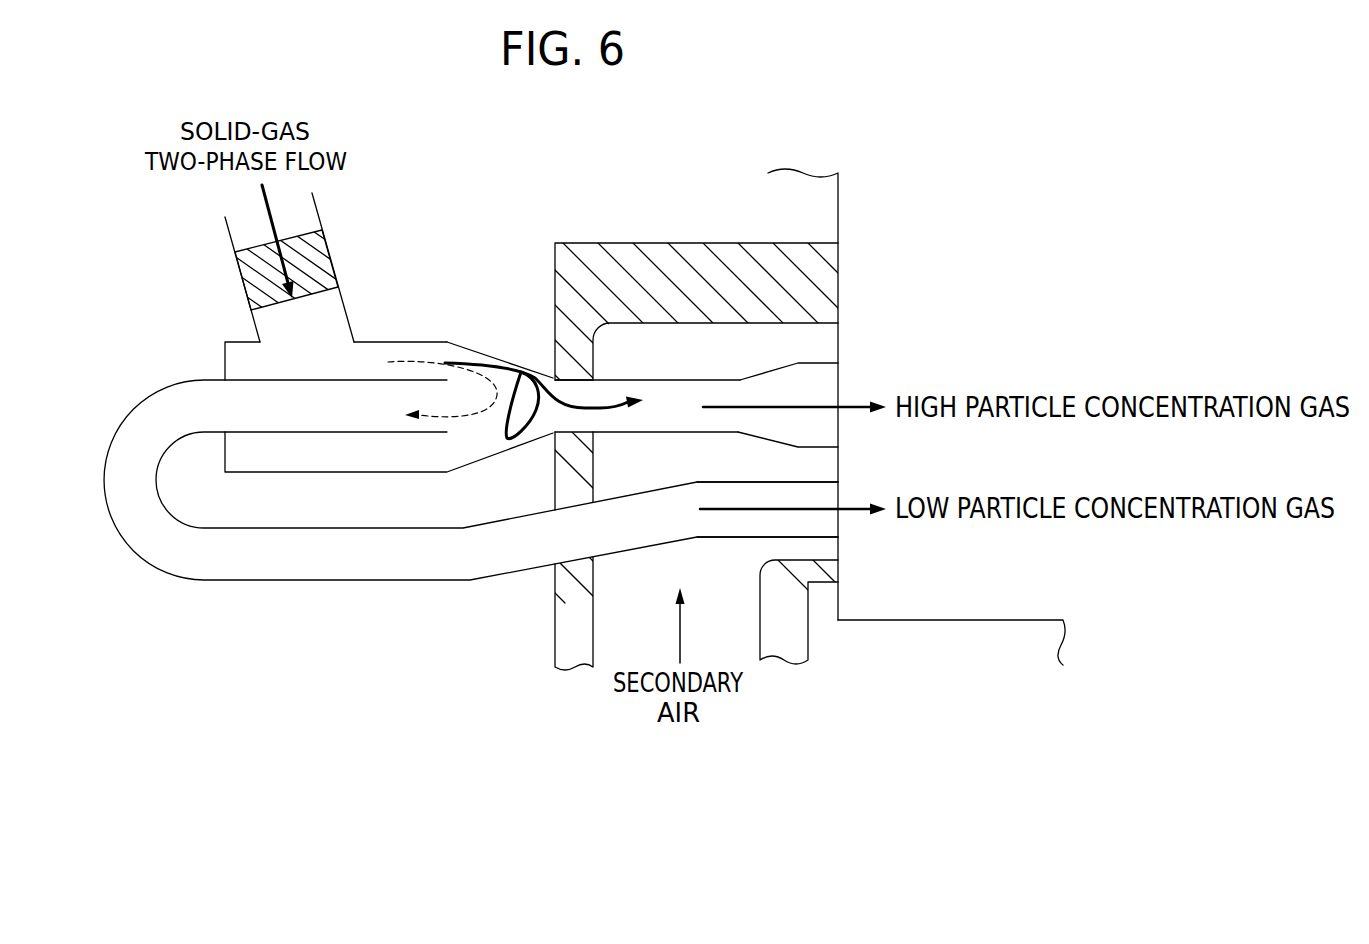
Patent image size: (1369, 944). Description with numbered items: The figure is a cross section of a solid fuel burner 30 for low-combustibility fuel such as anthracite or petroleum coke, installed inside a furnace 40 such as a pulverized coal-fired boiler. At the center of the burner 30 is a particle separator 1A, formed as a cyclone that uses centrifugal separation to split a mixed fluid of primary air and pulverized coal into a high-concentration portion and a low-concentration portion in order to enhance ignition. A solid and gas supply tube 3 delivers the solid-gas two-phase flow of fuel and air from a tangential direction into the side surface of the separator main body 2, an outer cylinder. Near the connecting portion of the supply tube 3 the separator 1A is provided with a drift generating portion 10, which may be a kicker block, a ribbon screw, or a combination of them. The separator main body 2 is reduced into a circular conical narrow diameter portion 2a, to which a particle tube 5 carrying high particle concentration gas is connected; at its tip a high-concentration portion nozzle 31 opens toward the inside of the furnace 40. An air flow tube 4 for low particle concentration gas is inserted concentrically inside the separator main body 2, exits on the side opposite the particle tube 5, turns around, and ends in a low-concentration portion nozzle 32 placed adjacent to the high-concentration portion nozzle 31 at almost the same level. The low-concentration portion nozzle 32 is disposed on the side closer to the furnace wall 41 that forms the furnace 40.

The particle separator 1A is at (408, 330).
The separator main body 2 is at (335, 473).
The narrow diameter portion 2a is at (488, 353).
The solid and gas supply tube 3 is at (315, 207).
The air flow tube 4 is at (153, 397).
The particle tube 5 is at (675, 387).
The drift generating portion 10 is at (328, 252).
The burner 30 is at (463, 192).
The high-concentration portion nozzle 31 is at (840, 383).
The low-concentration portion nozzle 32 is at (840, 537).
The furnace 40 is at (997, 338).
The furnace wall 41 is at (1030, 620).